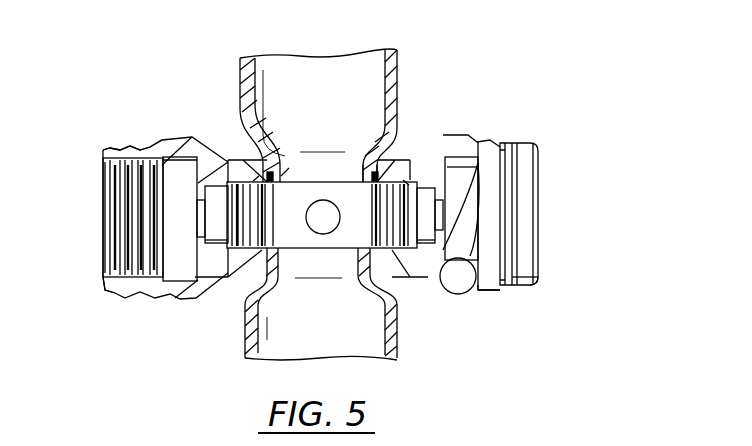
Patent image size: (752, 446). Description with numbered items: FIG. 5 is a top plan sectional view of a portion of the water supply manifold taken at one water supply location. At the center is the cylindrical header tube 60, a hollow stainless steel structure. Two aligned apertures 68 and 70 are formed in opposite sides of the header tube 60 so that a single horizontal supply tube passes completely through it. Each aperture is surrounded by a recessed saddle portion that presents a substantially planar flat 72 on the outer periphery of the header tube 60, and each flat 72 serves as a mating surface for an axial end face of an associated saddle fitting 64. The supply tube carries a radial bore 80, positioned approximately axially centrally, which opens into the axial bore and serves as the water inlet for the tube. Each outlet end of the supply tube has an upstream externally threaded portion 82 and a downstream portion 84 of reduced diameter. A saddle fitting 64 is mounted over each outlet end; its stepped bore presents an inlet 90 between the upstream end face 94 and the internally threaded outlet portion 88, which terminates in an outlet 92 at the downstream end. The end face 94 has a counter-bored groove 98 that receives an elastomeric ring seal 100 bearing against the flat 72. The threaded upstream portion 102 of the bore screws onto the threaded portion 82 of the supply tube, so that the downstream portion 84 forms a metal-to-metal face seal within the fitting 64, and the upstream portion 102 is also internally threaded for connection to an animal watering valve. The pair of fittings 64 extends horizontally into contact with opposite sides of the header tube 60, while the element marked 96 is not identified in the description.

The header tube 60 is at (402, 58).
The saddle fitting 64 is at (138, 147).
The aperture 68 is at (292, 249).
The aperture 70 is at (357, 249).
The flat 72 is at (392, 152).
The radial bore 80 is at (313, 202).
The externally threaded portion 82 is at (240, 256).
The downstream portion 84 is at (213, 262).
The outlet portion 88 is at (115, 147).
The inlet 90 is at (205, 215).
The outlet 92 is at (118, 191).
The end face 94 is at (223, 170).
The nut end 96 is at (103, 280).
The counter-bored groove 98 is at (292, 165).
The elastomeric ring seal 100 is at (280, 175).
The threaded upstream portion 102 is at (252, 178).